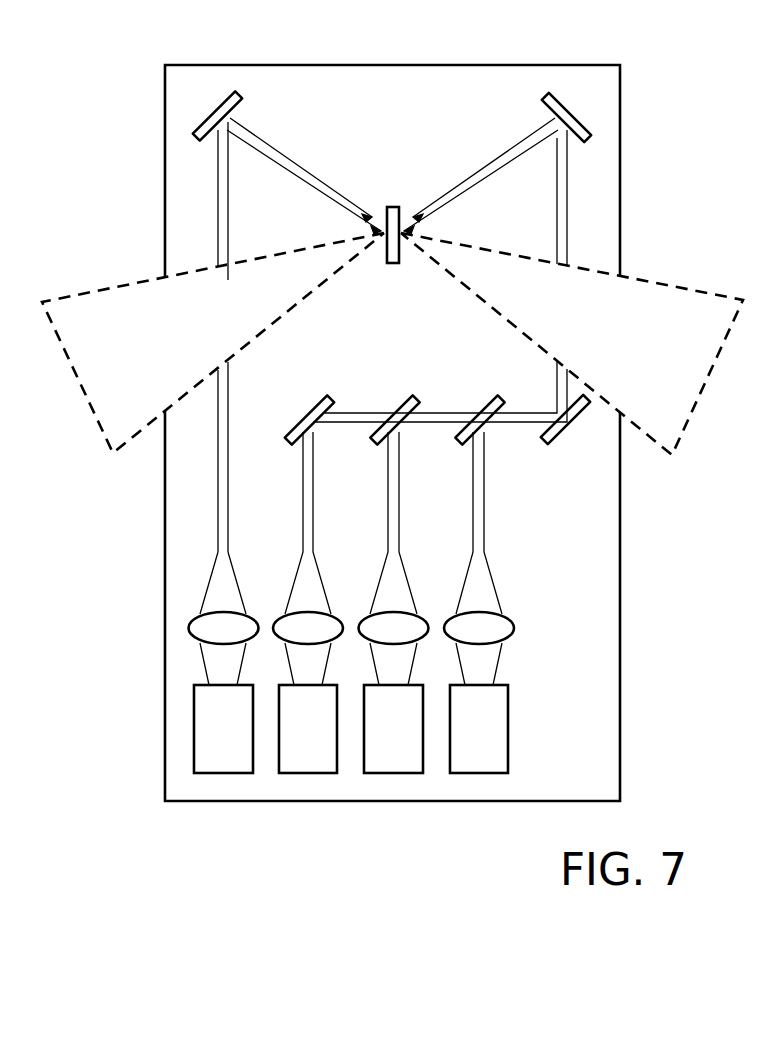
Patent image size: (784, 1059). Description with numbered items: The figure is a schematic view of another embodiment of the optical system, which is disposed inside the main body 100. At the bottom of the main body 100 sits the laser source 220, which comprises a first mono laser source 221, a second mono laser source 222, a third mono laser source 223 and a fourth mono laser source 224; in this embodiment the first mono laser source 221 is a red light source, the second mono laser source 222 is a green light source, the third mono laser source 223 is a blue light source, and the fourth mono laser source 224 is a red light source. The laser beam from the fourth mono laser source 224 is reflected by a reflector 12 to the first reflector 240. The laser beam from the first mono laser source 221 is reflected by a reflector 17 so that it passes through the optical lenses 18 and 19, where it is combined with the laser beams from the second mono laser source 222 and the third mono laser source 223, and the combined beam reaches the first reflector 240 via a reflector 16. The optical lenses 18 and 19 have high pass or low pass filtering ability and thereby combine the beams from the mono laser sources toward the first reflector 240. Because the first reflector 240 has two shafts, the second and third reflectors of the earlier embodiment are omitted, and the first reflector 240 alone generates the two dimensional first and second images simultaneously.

The reflector 12 is at (213, 114).
The reflector 16 is at (571, 425).
The reflector 17 is at (305, 412).
The optical lens 18 is at (392, 412).
The optical lens 19 is at (478, 412).
The main body 100 is at (620, 615).
The laser source 220 is at (223, 848).
The first mono laser source 221 is at (308, 758).
The second mono laser source 222 is at (393, 758).
The third mono laser source 223 is at (478, 758).
The fourth mono laser source 224 is at (223, 758).
The first reflector 240 is at (391, 207).